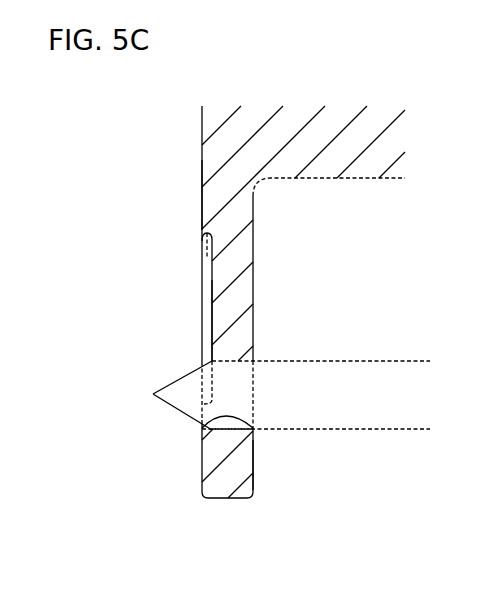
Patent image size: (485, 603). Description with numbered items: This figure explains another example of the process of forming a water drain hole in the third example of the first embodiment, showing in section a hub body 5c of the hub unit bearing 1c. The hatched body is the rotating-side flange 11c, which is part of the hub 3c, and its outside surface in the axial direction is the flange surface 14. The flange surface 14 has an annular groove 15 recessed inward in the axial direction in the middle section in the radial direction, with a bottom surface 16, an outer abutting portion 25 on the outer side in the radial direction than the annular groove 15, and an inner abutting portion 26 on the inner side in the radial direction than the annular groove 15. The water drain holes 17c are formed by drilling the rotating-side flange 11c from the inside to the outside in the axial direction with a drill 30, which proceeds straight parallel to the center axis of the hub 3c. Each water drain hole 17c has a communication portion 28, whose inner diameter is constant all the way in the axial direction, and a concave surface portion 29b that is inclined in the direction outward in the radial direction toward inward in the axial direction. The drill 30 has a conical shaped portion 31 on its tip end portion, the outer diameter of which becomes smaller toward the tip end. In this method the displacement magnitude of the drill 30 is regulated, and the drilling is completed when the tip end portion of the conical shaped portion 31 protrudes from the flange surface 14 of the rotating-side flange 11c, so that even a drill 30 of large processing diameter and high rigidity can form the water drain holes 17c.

The hub unit bearing 1c is at (348, 92).
The hub body 5c is at (367, 162).
The flange surface 14 is at (62, 163).
The inner abutting portion 26 is at (202, 188).
The annular groove 15 is at (202, 260).
The bottom surface 16 is at (205, 294).
The outer abutting portion 25 is at (202, 458).
The conical shaped portion 31 is at (183, 378).
The drill 30 is at (402, 368).
The water drain holes 17c is at (380, 440).
The communication portions 28 is at (233, 361).
The concave surface portions 29b is at (253, 428).
The rotating-side flange 11c is at (232, 478).
The hub 3c is at (271, 492).